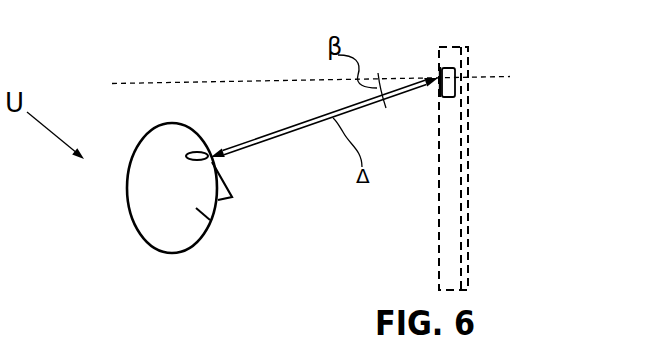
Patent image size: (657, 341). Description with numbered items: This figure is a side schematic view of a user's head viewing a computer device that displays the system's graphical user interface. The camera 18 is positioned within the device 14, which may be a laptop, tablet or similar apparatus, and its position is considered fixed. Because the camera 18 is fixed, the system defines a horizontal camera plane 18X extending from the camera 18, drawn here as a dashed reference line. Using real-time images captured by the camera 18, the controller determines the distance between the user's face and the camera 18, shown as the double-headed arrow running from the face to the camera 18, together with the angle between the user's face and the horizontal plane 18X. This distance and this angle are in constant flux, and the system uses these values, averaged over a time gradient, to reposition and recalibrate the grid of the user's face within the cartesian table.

The horizontal camera plane 18X is at (150, 83).
The camera 18 is at (454, 69).
The device 14 is at (455, 210).